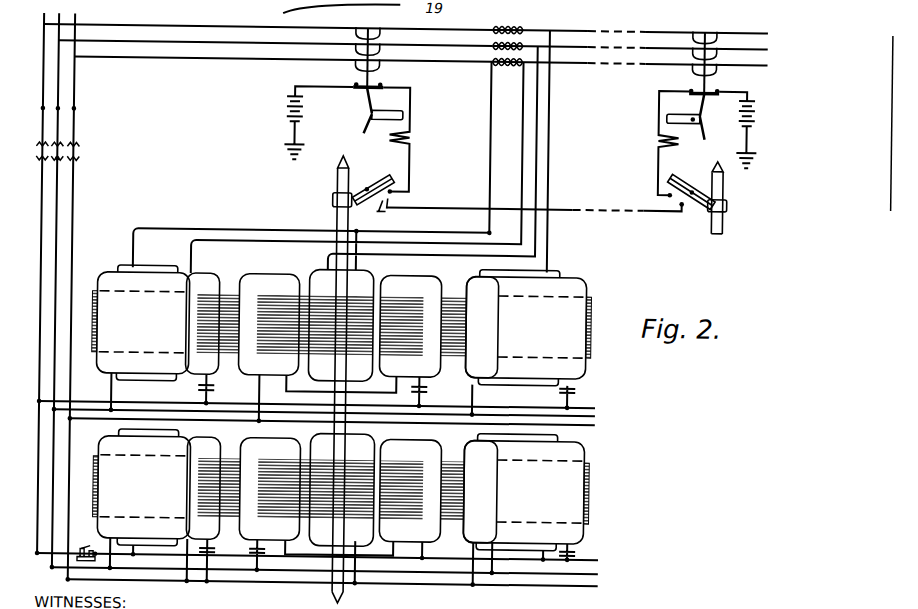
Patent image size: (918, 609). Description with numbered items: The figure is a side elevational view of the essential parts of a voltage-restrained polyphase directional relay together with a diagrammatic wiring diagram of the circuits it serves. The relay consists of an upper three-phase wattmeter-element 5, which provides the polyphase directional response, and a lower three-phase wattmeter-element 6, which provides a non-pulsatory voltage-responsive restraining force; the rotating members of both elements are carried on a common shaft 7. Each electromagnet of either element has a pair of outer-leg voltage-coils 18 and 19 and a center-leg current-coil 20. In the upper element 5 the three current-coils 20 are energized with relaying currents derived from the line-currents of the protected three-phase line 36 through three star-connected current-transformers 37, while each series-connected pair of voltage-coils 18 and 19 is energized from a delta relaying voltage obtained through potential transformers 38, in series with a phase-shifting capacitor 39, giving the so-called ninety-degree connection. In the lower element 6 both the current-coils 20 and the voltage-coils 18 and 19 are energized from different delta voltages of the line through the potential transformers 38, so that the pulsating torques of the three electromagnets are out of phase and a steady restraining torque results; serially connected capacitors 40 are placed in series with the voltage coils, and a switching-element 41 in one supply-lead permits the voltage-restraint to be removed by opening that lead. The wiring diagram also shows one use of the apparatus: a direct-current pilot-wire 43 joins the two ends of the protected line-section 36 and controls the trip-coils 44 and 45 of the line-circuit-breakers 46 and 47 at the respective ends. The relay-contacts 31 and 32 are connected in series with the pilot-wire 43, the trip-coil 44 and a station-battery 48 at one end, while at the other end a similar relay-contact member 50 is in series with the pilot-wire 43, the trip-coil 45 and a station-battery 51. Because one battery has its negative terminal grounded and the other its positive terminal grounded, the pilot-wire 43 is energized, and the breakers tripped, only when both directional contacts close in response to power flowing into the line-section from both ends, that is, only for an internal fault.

The upper three-phase wattmeter-element 5 is at (622, 334).
The lower three-phase wattmeter-element 6 is at (622, 499).
The common shaft 7 is at (336, 212).
The voltage-coil 18 is at (276, 376).
The voltage-coil 19 is at (105, 376).
The current-coil 20 is at (292, 1).
The relay-contact 31 is at (386, 214).
The relay-contact 32 is at (385, 178).
The three-phase line 36 is at (446, 58).
The current-transformer 37 is at (523, 32).
The potential transformer 38 is at (82, 151).
The capacitor 39 is at (432, 392).
The capacitor 40 is at (254, 549).
The switching-element 41 is at (88, 547).
The direct-current pilot-wire 43 is at (450, 203).
The trip-coil 44 is at (404, 135).
The trip-coil 45 is at (658, 133).
The line-circuit-breaker 46 is at (374, 37).
The line-circuit-breaker 47 is at (706, 35).
The station-battery 48 is at (283, 104).
The relay-contact member 50 is at (693, 206).
The station-battery 51 is at (753, 116).